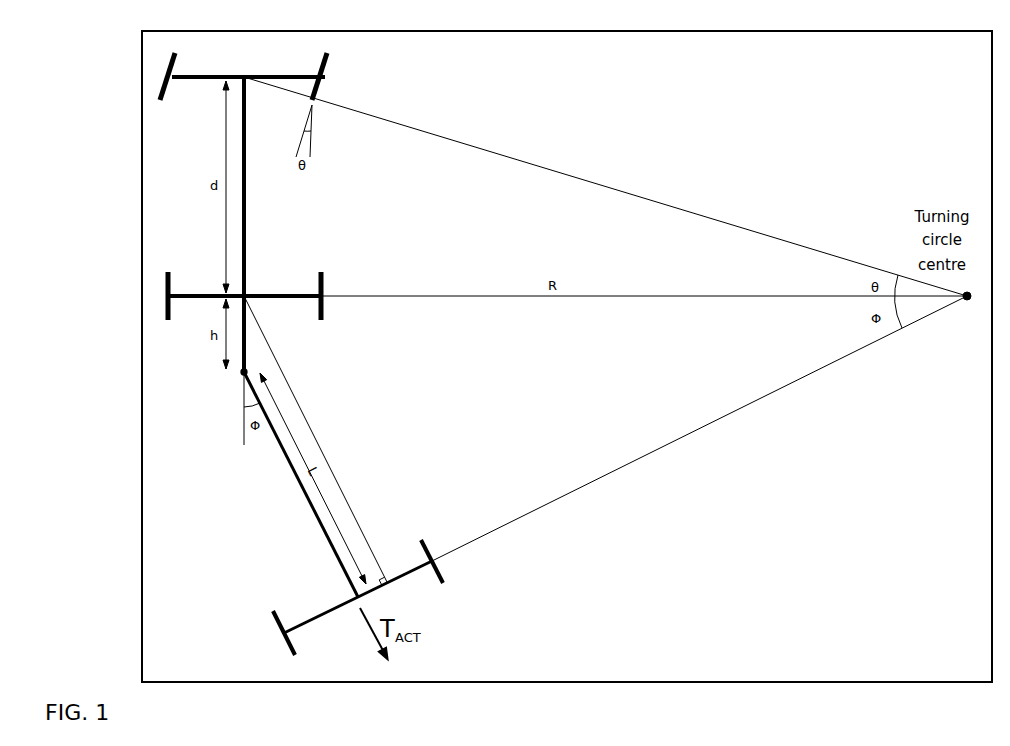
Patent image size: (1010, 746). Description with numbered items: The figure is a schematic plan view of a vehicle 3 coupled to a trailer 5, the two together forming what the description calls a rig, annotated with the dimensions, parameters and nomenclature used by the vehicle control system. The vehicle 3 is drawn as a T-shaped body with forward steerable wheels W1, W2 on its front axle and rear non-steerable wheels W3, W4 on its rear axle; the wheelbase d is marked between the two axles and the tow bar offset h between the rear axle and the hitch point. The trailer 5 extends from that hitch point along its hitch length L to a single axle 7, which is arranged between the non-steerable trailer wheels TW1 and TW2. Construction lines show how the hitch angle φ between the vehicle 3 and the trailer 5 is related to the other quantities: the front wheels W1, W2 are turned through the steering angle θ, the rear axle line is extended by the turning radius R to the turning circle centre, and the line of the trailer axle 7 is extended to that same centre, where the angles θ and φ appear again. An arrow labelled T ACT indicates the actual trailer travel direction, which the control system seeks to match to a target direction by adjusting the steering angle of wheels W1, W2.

The vehicle 3 is at (386, 92).
The trailer 5 is at (396, 449).
The axle 7 is at (413, 572).
The forward steerable wheel W1 is at (168, 73).
The forward steerable wheel W2 is at (327, 70).
The rear non-steerable wheel W3 is at (167, 285).
The rear non-steerable wheel W4 is at (323, 280).
The trailer wheel TW1 is at (278, 627).
The trailer wheel TW2 is at (430, 550).